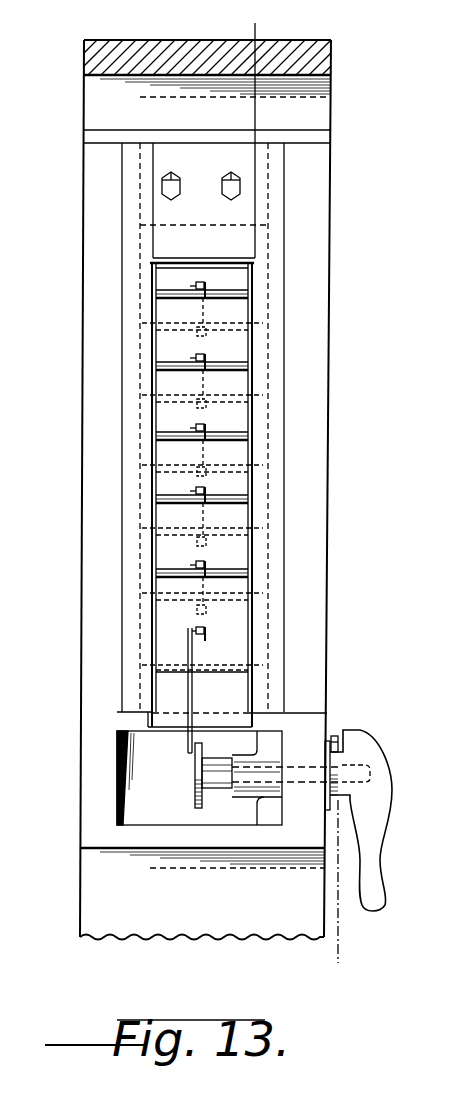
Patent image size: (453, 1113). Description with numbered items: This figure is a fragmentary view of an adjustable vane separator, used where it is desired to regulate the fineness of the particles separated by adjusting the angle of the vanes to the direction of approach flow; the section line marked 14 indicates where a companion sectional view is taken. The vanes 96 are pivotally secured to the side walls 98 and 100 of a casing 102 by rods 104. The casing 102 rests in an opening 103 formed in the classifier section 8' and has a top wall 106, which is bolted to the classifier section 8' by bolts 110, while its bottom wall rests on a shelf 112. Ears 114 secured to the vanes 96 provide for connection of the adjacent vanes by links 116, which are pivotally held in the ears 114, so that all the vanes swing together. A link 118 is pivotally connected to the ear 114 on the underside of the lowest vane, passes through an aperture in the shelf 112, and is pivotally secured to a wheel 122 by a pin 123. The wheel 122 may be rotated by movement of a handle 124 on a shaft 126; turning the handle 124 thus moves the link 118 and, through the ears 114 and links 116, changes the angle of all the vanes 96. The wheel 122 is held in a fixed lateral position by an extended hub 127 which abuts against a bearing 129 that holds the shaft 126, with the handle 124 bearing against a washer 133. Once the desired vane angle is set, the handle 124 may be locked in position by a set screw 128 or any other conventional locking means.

The classifier section 8' is at (216, 490).
The section line 14 is at (250, 20).
The vanes 96 is at (165, 278).
The side wall 98 is at (142, 515).
The side wall 100 is at (255, 490).
The casing 102 is at (260, 257).
The opening 103 is at (267, 317).
The rods 104 is at (258, 596).
The top wall 106 is at (242, 208).
The bolts 110 is at (175, 177).
The shelf 112 is at (127, 712).
The ears 114 is at (205, 356).
The links 116 is at (208, 358).
The link 118 is at (185, 741).
The wheel 122 is at (193, 790).
The pin 123 is at (202, 754).
The handle 124 is at (363, 752).
The shaft 126 is at (270, 797).
The extended hub 127 is at (212, 793).
The set screw 128 is at (333, 737).
The bearing 129 is at (226, 797).
The washer 133 is at (327, 812).